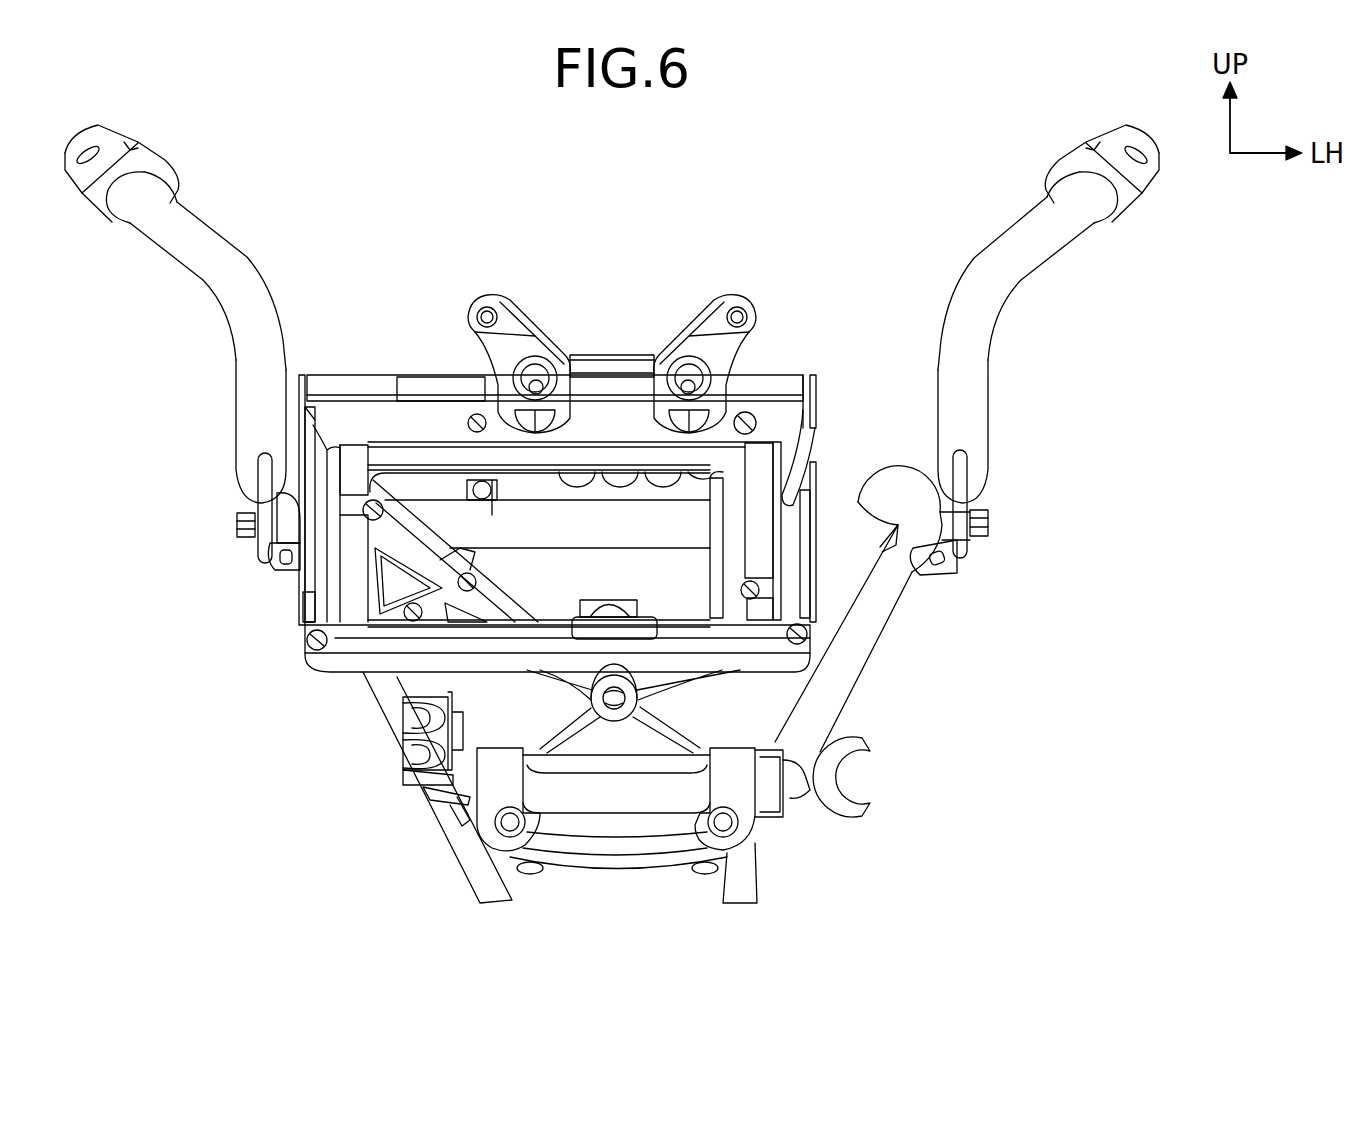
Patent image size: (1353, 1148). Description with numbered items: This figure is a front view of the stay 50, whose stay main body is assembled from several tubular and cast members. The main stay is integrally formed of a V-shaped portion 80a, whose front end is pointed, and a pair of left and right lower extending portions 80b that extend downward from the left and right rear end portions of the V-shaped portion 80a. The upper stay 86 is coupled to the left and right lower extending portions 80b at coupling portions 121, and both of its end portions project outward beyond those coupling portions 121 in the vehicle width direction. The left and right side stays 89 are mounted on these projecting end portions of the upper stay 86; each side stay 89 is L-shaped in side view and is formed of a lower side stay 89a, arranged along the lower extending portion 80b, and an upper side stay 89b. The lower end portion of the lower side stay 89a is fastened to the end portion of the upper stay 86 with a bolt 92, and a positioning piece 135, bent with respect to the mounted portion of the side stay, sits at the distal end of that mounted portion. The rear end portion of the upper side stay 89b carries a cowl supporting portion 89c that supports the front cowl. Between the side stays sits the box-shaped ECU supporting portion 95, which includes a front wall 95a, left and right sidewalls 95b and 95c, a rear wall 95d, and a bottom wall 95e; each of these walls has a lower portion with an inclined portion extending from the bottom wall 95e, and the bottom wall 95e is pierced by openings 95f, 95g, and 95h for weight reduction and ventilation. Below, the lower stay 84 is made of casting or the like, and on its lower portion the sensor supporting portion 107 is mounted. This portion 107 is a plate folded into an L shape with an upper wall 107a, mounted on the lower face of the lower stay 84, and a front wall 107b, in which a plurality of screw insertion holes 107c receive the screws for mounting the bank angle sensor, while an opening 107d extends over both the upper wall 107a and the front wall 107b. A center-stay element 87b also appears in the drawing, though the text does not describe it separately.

The stay 50 is at (428, 140).
The lower stay 84 is at (465, 873).
The upper stay 86 is at (460, 512).
The pivot bushing 87b is at (636, 674).
The side stay 89 is at (208, 215).
The lower side stay 89a is at (248, 424).
The upper side stay 89b is at (160, 232).
The cowl supporting portion 89c is at (125, 135).
The bolt 92 is at (240, 527).
The ECU supporting portion 95 is at (352, 385).
The front wall 95a is at (360, 650).
The left sidewall 95b is at (818, 587).
The right sidewall 95c is at (293, 597).
The rear wall 95d is at (445, 372).
The bottom wall 95e is at (762, 485).
The opening 95f is at (733, 527).
The opening 95g is at (400, 592).
The opening 95h is at (403, 697).
The V-shaped portion 80a is at (845, 538).
The lower extending portion 80b is at (890, 600).
The sensor supporting portion 107 is at (595, 835).
The upper wall 107a is at (657, 757).
The front wall 107b is at (738, 795).
The screw insertion hole 107c is at (507, 830).
The opening 107d is at (632, 805).
The coupling portion 121 is at (293, 527).
The positioning piece 135 is at (287, 577).